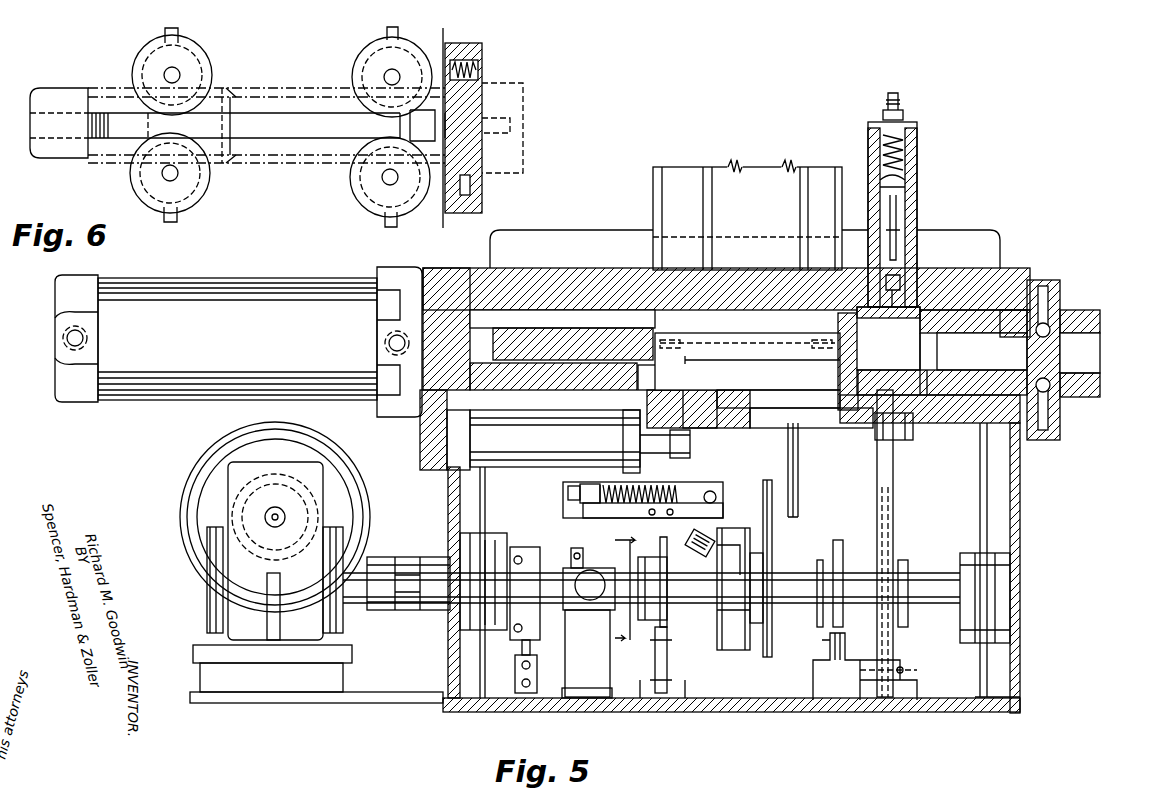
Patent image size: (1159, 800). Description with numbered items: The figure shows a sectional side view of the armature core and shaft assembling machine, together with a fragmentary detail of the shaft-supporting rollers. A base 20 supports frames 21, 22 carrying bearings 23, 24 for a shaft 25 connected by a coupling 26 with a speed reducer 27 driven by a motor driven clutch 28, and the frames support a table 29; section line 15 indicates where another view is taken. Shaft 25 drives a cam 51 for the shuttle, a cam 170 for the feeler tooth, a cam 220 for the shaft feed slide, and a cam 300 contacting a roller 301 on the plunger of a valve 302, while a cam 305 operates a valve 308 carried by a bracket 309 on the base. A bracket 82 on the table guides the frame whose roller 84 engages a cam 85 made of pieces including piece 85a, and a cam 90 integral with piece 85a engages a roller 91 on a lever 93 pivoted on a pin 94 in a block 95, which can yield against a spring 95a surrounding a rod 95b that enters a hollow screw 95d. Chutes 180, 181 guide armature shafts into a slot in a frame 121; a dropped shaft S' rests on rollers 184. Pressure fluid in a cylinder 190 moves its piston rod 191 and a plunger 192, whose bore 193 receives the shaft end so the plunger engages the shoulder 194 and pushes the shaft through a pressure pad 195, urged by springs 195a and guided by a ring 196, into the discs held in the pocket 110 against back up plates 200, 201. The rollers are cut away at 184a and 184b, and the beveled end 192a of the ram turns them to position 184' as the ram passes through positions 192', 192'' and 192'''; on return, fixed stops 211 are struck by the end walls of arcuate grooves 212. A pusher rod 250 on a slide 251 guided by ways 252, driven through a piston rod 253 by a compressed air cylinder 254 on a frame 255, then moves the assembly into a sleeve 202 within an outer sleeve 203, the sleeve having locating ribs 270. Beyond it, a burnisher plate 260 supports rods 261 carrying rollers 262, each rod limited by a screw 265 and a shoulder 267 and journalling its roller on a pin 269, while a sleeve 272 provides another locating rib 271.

In FIG. 5, the base 20 is at (1010, 713).
In FIG. 5, the frame 21 is at (448, 672).
In FIG. 5, the frame 22 is at (1020, 575).
In FIG. 5, the bearing 23 is at (495, 548).
In FIG. 5, the bearing 24 is at (990, 553).
In FIG. 5, the shaft 25 is at (935, 573).
In FIG. 5, the coupling 26 is at (412, 557).
In FIG. 5, the speed reducer 27 is at (205, 610).
In FIG. 5, the motor driven clutch 28 is at (200, 503).
In FIG. 5, the table 29 is at (976, 425).
In FIG. 5, the section line 15 is at (631, 587).
In FIG. 5, the cam 51 is at (893, 640).
In FIG. 5, the bracket 82 is at (798, 462).
In FIG. 5, the roller 84 is at (798, 484).
In FIG. 5, the cam 85 is at (772, 532).
In FIG. 5, the cam piece 85a is at (748, 648).
In FIG. 5, the cam 90 is at (710, 600).
In FIG. 5, the roller 91 is at (695, 550).
In FIG. 5, the lever 93 is at (692, 535).
In FIG. 5, the pin 94 is at (710, 503).
In FIG. 5, the block 95 is at (695, 495).
In FIG. 5, the spring 95a is at (620, 508).
In FIG. 5, the rod 95b is at (576, 511).
In FIG. 5, the hollow screw 95d is at (572, 483).
In FIG. 5, the pocket 110 is at (862, 380).
In FIG. 5, the frame 121 is at (740, 290).
In FIG. 5, the cam 170 is at (840, 540).
In FIG. 5, the chute 180 is at (678, 168).
In FIG. 5, the chute 181 is at (820, 170).
In FIG. 5, the cylinder 190 is at (312, 290).
In FIG. 5, the piston rod 191 is at (475, 320).
In FIG. 5, the plunger 192 is at (726, 310).
In FIG. 5, the bore 193 is at (590, 372).
In FIG. 5, the shoulder 194 is at (660, 377).
In FIG. 5, the pressure pad 195 is at (888, 338).
In FIG. 5, the back up plate 200 is at (955, 295).
In FIG. 5, the back up plate 201 is at (950, 392).
In FIG. 5, the sleeve 202 is at (1015, 310).
In FIG. 5, the outer sleeve 203 is at (1028, 318).
In FIG. 5, the cam 220 is at (670, 620).
In FIG. 5, the pusher rod 250 is at (830, 365).
In FIG. 5, the slide 251 is at (718, 400).
In FIG. 5, the ways 252 is at (782, 425).
In FIG. 5, the piston rod 253 is at (665, 455).
In FIG. 5, the compressed air cylinder 254 is at (598, 435).
In FIG. 5, the frame 255 is at (420, 438).
In FIG. 5, the plate 260 is at (1062, 425).
In FIG. 5, the rod 261 is at (1060, 308).
In FIG. 5, the roller 262 is at (1080, 335).
In FIG. 5, the screw 265 is at (1062, 280).
In FIG. 5, the shoulder 267 is at (1060, 290).
In FIG. 5, the pin 269 is at (1080, 350).
In FIG. 5, the locating rib 270 is at (972, 368).
In FIG. 5, the locating rib 271 is at (1100, 380).
In FIG. 5, the sleeve 272 is at (1100, 395).
In FIG. 5, the cam 300 is at (538, 620).
In FIG. 5, the roller 301 is at (532, 645).
In FIG. 5, the valve 302 is at (537, 655).
In FIG. 5, the cam 305 is at (587, 548).
In FIG. 5, the valve 308 is at (578, 570).
In FIG. 5, the bracket 309 is at (605, 655).
In FIG. 5, the dropped armature shaft S' is at (747, 361).
In FIG. 6, the roller 184 is at (422, 35).
In FIG. 6, the roller turned position 184' is at (154, 71).
In FIG. 6, the cut away portion 184a is at (372, 72).
In FIG. 6, the cut away roller surface 184b is at (385, 105).
In FIG. 6, the ram position 192' is at (237, 144).
In FIG. 6, the ram position 192'' is at (243, 178).
In FIG. 6, the ram position 192''' is at (509, 128).
In FIG. 6, the beveled end 192a is at (228, 95).
In FIG. 6, the spring 195a is at (480, 72).
In FIG. 6, the ring 196 is at (482, 60).
In FIG. 6, the fixed stop 211 is at (385, 225).
In FIG. 6, the arcuate groove 212 is at (372, 197).